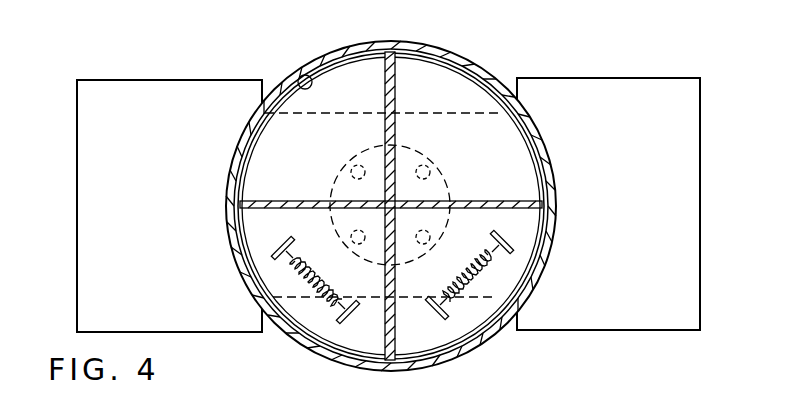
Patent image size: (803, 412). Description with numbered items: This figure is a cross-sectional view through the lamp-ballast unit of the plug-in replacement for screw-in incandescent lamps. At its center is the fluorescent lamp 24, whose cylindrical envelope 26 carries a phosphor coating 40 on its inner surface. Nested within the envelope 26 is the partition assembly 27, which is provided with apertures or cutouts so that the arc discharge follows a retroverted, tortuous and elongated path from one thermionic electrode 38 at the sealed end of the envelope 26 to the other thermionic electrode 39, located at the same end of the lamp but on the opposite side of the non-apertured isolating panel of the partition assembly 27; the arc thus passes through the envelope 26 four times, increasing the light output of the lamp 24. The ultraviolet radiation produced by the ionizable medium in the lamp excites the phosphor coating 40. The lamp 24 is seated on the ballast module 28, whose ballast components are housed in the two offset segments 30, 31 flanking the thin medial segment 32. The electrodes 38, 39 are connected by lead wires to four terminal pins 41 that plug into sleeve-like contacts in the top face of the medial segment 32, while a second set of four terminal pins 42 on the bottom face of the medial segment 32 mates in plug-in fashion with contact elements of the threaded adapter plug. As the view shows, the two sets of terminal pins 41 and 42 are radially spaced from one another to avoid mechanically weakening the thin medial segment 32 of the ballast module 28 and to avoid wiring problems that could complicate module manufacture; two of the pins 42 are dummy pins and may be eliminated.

The fluorescent lamp 24 is at (497, 73).
The cylindrical envelope 26 is at (315, 345).
The partition assembly 27 is at (398, 76).
The ballast module 28 is at (112, 75).
The offset segment 30 is at (643, 86).
The offset segment 31 is at (108, 143).
The medial segment 32 is at (500, 143).
The thermionic electrode 38 is at (490, 262).
The thermionic electrode 39 is at (288, 260).
The phosphor coating 40 is at (318, 66).
The terminal pins 41 is at (345, 180).
The terminal pins 42 is at (358, 150).